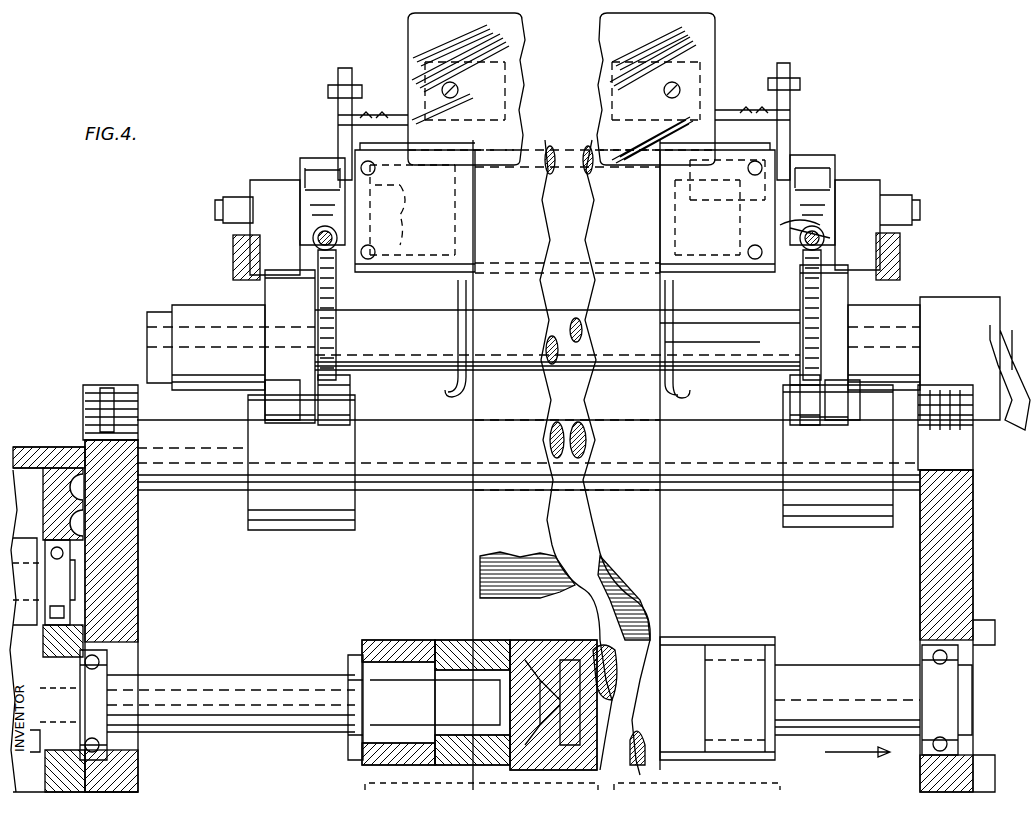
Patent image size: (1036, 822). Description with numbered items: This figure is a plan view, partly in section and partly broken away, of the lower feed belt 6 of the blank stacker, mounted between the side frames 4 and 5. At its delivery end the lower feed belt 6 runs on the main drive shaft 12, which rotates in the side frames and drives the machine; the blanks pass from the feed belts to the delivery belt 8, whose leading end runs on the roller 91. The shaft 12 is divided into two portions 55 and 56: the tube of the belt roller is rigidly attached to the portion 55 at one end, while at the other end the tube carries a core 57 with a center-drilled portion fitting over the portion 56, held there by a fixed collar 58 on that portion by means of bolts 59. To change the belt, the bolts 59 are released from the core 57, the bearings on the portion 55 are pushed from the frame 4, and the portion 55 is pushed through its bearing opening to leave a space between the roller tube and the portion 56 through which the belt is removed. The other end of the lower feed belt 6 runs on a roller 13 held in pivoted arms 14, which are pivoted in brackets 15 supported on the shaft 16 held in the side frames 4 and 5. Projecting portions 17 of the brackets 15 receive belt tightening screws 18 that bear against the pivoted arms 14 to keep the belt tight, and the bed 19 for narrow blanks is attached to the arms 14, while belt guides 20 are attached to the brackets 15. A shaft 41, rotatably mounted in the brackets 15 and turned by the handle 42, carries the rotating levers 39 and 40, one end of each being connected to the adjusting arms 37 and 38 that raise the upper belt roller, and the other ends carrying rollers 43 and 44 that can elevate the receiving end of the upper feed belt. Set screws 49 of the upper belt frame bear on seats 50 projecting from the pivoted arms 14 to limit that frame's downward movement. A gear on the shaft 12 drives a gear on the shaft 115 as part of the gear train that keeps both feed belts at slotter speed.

The side frame 4 is at (965, 570).
The side frame 5 is at (140, 557).
The lower feed belt 6 is at (652, 548).
The delivery belt 8 is at (470, 783).
The shaft 12 is at (815, 668).
The roller 13 is at (565, 207).
The pivoted arms 14 is at (855, 150).
The brackets 15 is at (842, 532).
The shaft 16 is at (725, 440).
The projecting portions 17 is at (792, 301).
The belt tightening screws 18 is at (340, 260).
The bed 19 is at (508, 90).
The belt guides 20 is at (712, 382).
The adjusting arm 37 is at (895, 240).
The adjusting arm 38 is at (233, 250).
The rotating lever 39 is at (831, 345).
The rotating lever 40 is at (290, 346).
The shaft 41 is at (712, 330).
The handle 42 is at (1005, 415).
The roller 43 is at (800, 405).
The roller 44 is at (340, 402).
The set screws 49 is at (812, 240).
The seats 50 is at (812, 232).
The shaft portion 55 is at (862, 668).
The shaft portion 56 is at (212, 665).
The core 57 is at (458, 640).
The fixed collar 58 is at (400, 640).
The bolts 59 is at (353, 655).
The roller 91 is at (372, 783).
The shaft 115 is at (22, 548).